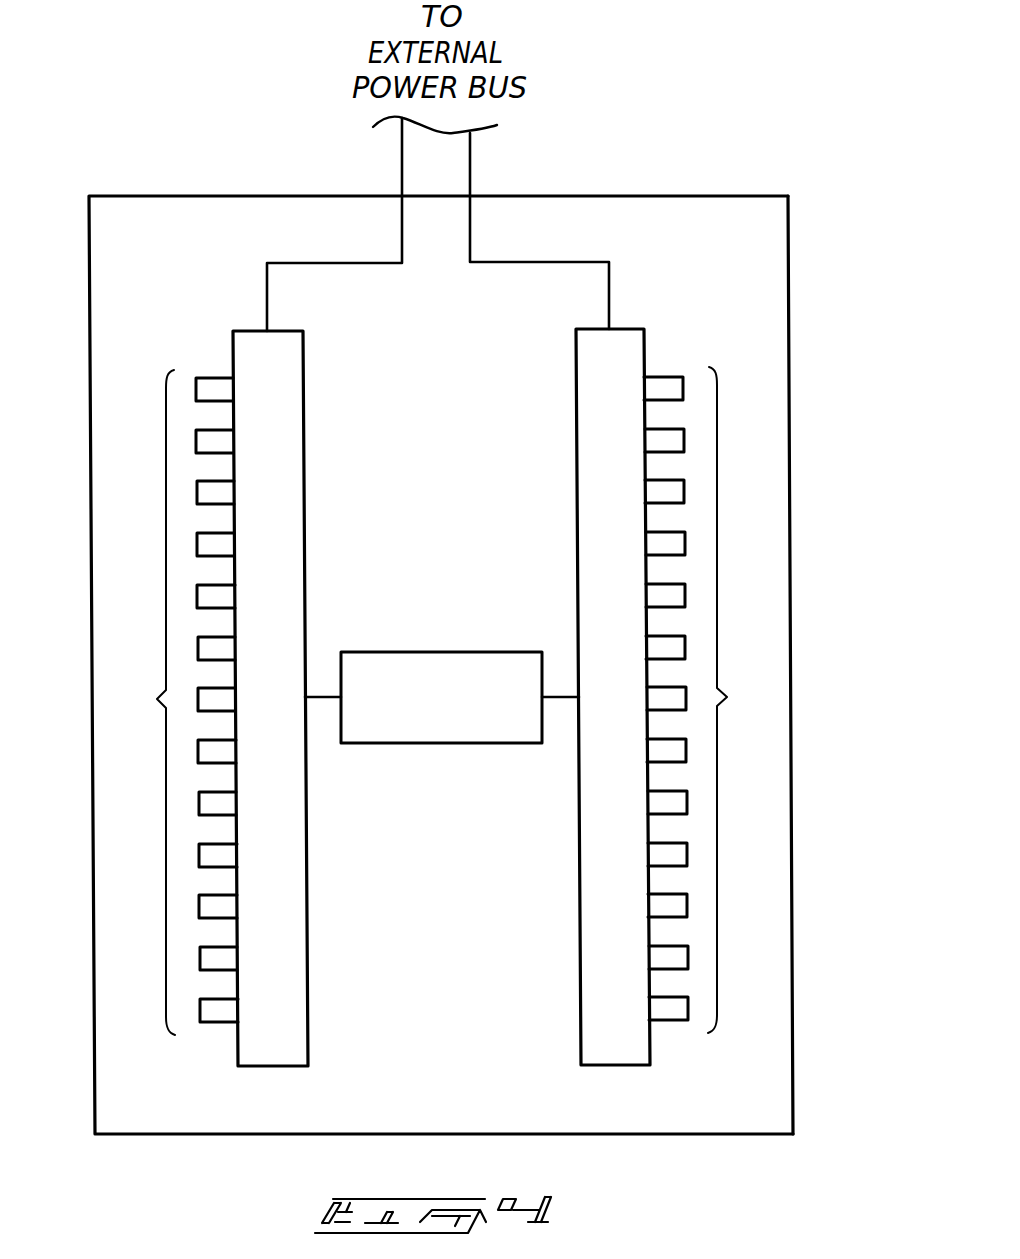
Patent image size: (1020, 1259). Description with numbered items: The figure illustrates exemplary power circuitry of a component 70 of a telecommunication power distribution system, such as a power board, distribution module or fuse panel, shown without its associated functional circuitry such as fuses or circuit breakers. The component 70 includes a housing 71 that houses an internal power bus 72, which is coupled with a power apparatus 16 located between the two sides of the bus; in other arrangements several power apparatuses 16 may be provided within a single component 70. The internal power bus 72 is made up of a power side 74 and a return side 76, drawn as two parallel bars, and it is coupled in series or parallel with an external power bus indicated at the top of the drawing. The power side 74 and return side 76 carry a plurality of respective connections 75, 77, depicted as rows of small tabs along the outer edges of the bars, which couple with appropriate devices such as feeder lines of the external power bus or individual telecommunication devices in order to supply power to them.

The power apparatus 16 is at (455, 650).
The component 70 is at (843, 266).
The housing 71 is at (790, 545).
The internal power bus 72 is at (553, 900).
The power side 74 is at (274, 1032).
The connections 75 is at (176, 702).
The return side 76 is at (612, 1033).
The connections 77 is at (707, 700).